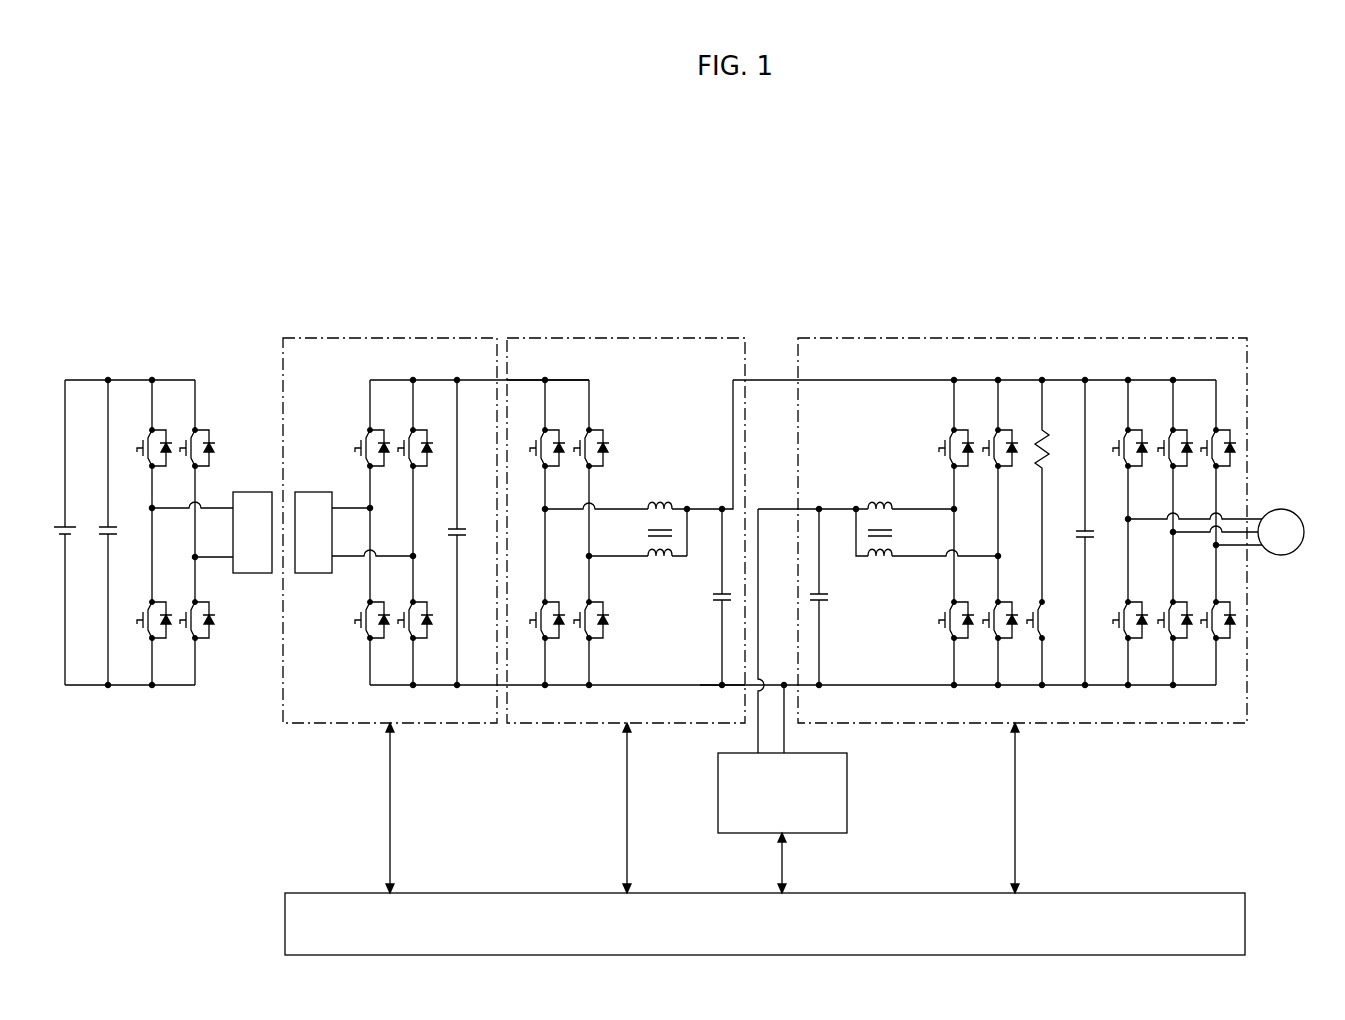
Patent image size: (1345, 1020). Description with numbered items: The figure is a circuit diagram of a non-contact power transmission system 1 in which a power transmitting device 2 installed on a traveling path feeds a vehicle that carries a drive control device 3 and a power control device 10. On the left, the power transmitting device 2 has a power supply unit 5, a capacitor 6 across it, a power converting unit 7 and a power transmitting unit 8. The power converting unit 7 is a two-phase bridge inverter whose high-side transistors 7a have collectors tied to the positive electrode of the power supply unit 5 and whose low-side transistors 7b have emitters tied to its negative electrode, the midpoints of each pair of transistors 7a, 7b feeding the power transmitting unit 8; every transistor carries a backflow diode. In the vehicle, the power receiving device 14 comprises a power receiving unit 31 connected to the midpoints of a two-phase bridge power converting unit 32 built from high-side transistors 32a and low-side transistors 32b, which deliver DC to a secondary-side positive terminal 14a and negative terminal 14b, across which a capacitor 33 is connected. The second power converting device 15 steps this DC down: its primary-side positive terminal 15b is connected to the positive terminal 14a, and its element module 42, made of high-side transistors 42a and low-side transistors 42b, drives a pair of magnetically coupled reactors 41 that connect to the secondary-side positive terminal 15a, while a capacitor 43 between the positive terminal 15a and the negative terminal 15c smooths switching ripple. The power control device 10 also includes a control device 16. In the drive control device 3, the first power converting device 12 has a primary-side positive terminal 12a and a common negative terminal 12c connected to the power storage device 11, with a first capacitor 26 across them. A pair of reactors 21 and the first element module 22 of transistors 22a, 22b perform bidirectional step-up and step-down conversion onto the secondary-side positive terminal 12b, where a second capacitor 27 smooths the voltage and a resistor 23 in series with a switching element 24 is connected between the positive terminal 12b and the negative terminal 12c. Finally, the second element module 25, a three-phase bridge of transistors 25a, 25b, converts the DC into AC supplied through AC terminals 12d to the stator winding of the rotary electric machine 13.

The non-contact power transmission system 1 is at (1265, 236).
The power transmitting device 2 is at (240, 340).
The drive control device 3 is at (1247, 292).
The power supply unit 5 is at (70, 527).
The capacitor 6 is at (115, 527).
The power converting unit 7 is at (188, 378).
The transistor 7a is at (195, 430).
The transistor 7b is at (195, 638).
The power transmitting unit 8 is at (247, 492).
The power control device 10 is at (717, 268).
The power storage device 11 is at (848, 798).
The first power converting device 12 is at (1247, 352).
The positive terminal 12a is at (819, 509).
The positive terminal 12b is at (1087, 380).
The negative terminal 12c is at (819, 685).
The AC terminal 12d is at (1222, 547).
The rotary electric machine 13 is at (1281, 509).
The power receiving device 14 is at (497, 370).
The positive terminal 14a is at (457, 380).
The negative terminal 14b is at (457, 685).
The second power converting device 15 is at (677, 338).
The positive terminal 15a is at (722, 505).
The positive terminal 15b is at (545, 380).
The negative terminal 15c is at (722, 685).
The control device 16 is at (1243, 893).
The reactors 21 is at (880, 556).
The first element module 22 is at (1000, 378).
The transistor 22a is at (998, 430).
The transistor 22b is at (998, 638).
The resistor 23 is at (1042, 430).
The switching element 24 is at (1042, 602).
The second element module 25 is at (1200, 378).
The transistor 25a is at (1216, 430).
The transistor 25b is at (1216, 638).
The first capacitor 26 is at (830, 604).
The second capacitor 27 is at (1088, 531).
The power receiving unit 31 is at (316, 492).
The power converting unit 32 is at (387, 380).
The transistor 32a is at (413, 430).
The transistor 32b is at (413, 602).
The capacitor 33 is at (460, 527).
The reactors 41 is at (648, 556).
The element module 42 is at (595, 378).
The transistor 42a is at (589, 430).
The transistor 42b is at (589, 638).
The capacitor 43 is at (720, 594).